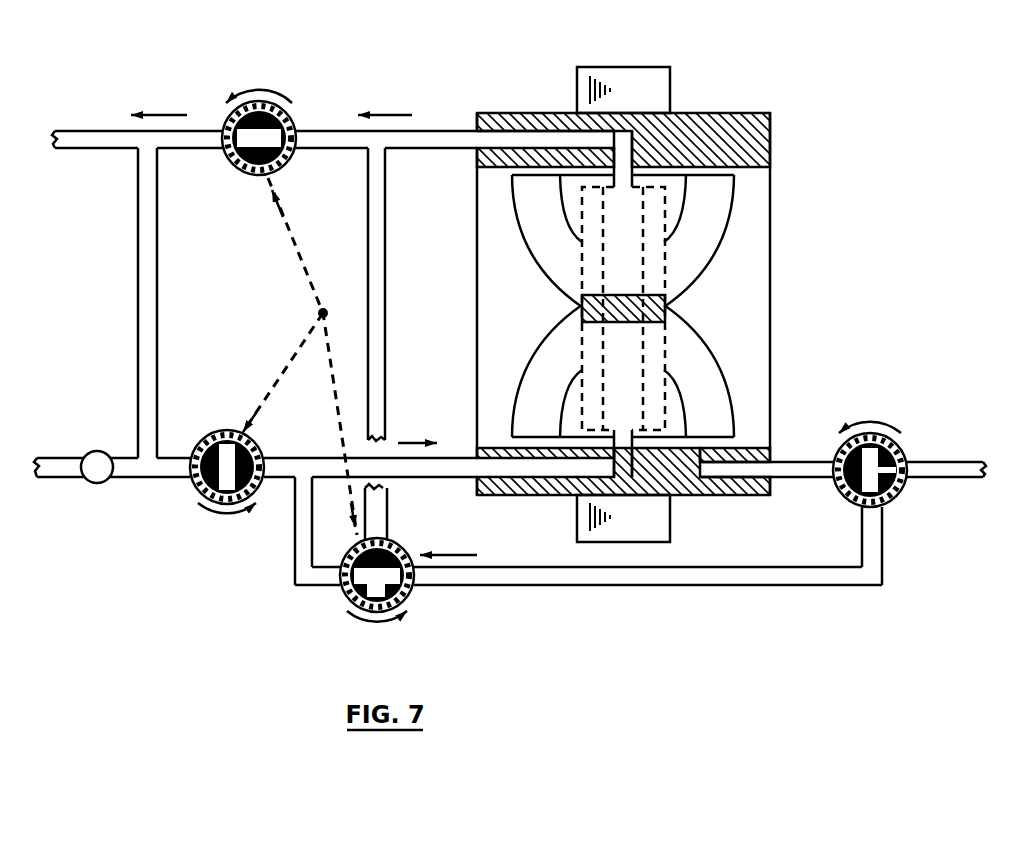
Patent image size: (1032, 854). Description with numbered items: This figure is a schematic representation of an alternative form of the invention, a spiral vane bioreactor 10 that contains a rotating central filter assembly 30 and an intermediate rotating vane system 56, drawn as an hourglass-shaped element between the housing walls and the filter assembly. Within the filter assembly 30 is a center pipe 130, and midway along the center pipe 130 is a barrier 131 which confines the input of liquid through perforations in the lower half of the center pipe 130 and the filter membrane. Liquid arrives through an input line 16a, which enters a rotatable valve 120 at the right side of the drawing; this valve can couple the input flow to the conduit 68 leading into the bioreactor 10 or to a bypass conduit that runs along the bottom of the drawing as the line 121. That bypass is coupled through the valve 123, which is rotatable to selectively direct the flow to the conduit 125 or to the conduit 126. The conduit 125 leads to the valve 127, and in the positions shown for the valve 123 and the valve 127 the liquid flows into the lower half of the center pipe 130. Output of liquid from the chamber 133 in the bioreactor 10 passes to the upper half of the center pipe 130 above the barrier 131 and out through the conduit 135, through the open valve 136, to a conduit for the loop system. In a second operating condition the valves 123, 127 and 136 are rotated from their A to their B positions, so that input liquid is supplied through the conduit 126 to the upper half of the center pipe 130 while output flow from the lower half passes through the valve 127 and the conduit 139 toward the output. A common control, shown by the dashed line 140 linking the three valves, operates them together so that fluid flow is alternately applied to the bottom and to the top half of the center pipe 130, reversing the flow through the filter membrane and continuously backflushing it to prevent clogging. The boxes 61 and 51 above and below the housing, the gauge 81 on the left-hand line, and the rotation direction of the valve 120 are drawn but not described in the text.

The spiral vane bioreactor 10 is at (774, 325).
The intermediate rotating vane system 56 is at (740, 212).
The rotating central filter assembly 30 is at (666, 225).
The center pipe 130 is at (650, 377).
The barrier 131 is at (660, 306).
The chamber 133 is at (768, 412).
The upper bearing 61 is at (673, 90).
The lower bearing 51 is at (574, 518).
The conduit 135 is at (321, 129).
The conduit 139 is at (159, 322).
The valve V 81 is at (93, 490).
The conduit 125 is at (292, 562).
The bottom pipe 121 is at (776, 588).
The conduit 126 is at (392, 513).
The conduit 68 is at (787, 480).
The input line 16a is at (932, 482).
The valve 136 is at (227, 156).
The valve 127 is at (266, 446).
The valve 123 is at (343, 592).
The right ball valve 120 is at (906, 443).
The common control 140 is at (292, 229).